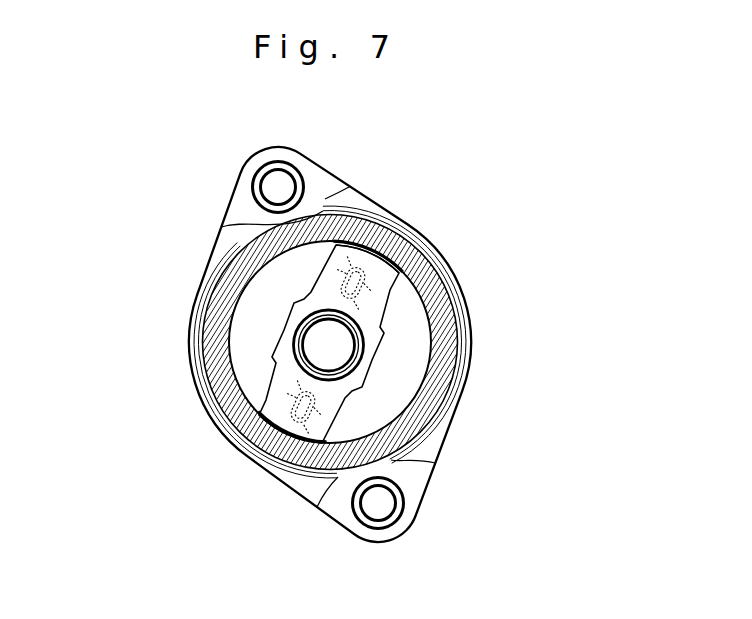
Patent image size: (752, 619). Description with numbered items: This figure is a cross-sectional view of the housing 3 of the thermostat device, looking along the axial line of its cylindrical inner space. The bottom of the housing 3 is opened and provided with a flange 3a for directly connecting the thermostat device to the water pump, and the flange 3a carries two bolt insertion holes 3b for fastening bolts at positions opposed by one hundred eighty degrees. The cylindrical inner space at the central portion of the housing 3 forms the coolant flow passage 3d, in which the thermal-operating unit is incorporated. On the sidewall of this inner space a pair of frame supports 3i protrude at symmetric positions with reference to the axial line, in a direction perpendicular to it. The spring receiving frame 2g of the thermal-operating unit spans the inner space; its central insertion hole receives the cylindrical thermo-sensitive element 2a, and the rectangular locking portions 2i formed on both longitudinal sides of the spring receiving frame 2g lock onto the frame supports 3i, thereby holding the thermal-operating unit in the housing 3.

The housing 3 is at (462, 284).
The flange 3a is at (318, 175).
The bolt insertion holes 3b is at (272, 188).
The coolant flow passage 3d is at (228, 345).
The frame supports 3i is at (375, 238).
The thermo-sensitive element 2a is at (340, 352).
The spring receiving frame 2g is at (382, 319).
The locking portions 2i is at (400, 271).